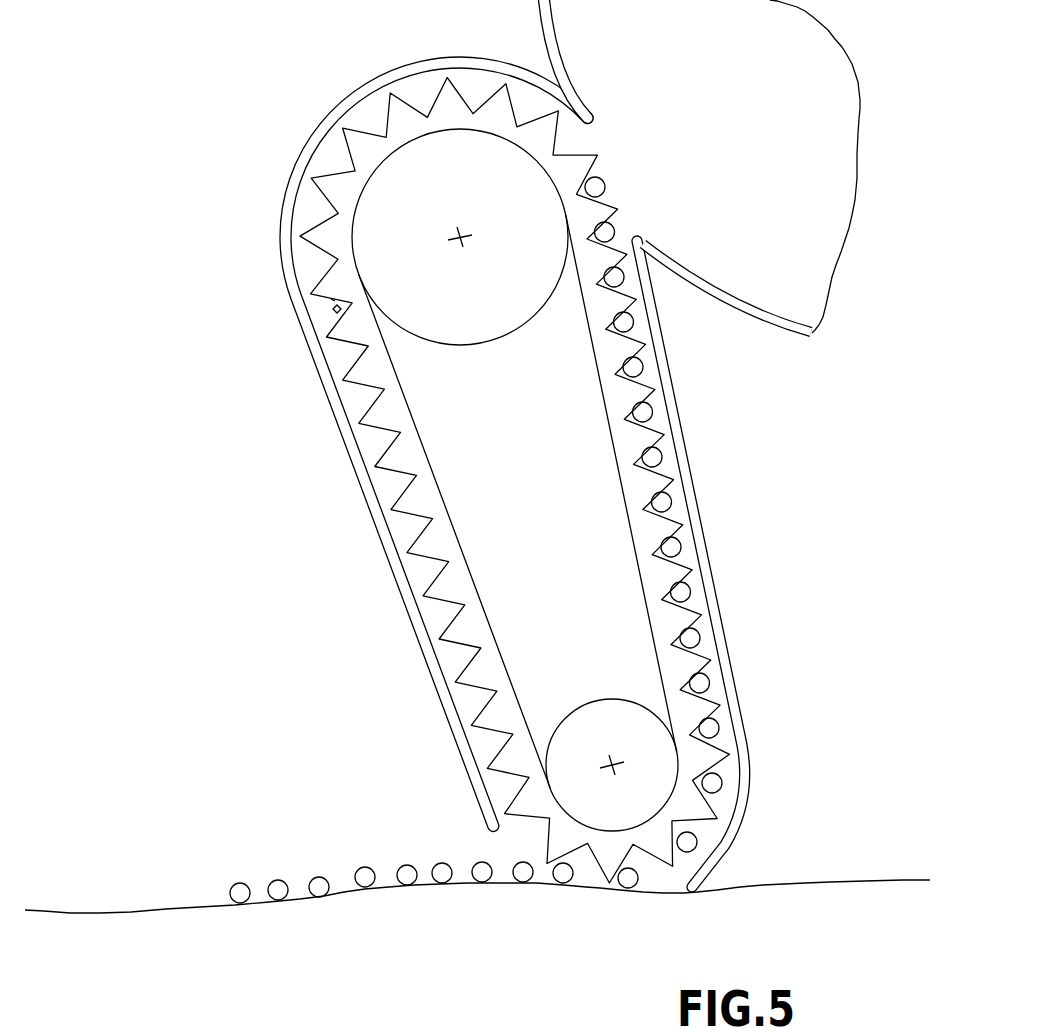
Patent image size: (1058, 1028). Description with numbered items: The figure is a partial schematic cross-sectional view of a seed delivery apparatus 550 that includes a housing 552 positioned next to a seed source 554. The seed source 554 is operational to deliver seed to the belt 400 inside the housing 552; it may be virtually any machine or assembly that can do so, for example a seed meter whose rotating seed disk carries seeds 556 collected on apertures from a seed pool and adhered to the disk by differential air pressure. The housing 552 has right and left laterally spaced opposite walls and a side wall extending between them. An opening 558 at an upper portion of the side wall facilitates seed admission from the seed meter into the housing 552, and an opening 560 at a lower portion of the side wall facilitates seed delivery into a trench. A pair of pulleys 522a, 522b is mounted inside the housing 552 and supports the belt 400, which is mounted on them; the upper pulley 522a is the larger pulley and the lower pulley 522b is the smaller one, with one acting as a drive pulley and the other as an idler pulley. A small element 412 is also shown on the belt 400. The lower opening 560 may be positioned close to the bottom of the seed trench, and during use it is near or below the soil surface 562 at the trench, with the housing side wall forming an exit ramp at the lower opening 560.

The seed delivery apparatus 550 is at (145, 70).
The seed source 554 is at (537, 29).
The opening 558 is at (622, 131).
The pulley 522a is at (383, 182).
The pulley 522b is at (562, 770).
The belt marker element 412 is at (333, 300).
The housing 552 is at (330, 383).
The belt 400 is at (422, 497).
The seeds 556 is at (705, 640).
The soil surface 562 is at (110, 912).
The opening 560 is at (562, 898).